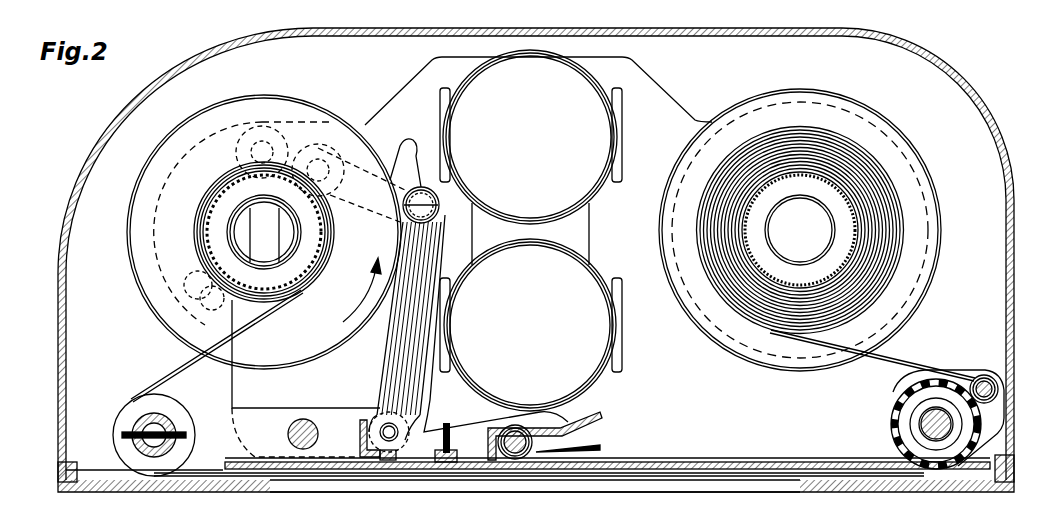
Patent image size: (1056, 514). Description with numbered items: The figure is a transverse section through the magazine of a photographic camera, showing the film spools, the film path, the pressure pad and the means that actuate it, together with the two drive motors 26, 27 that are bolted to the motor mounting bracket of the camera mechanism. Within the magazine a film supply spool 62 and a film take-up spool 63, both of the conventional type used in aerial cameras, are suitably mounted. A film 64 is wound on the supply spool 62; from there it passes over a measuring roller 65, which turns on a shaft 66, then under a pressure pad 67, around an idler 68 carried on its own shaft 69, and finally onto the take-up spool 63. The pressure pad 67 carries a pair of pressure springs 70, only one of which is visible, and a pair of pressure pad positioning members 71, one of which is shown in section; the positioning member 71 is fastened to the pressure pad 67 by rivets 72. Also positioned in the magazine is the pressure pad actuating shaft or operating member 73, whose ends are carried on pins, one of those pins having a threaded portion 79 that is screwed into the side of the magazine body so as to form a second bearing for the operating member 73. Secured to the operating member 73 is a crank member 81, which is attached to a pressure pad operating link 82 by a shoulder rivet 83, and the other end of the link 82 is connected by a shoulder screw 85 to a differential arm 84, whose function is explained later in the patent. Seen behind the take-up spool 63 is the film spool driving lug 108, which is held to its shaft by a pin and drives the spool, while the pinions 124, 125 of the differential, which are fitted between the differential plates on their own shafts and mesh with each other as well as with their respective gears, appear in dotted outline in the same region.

The motor 26 is at (600, 146).
The motor 27 is at (592, 285).
The film supply spool 62 is at (803, 102).
The film take-up spool 63 is at (192, 130).
The film 64 is at (882, 366).
The measuring roller 65 is at (893, 438).
The shaft 66 is at (922, 420).
The pressure pad 67 is at (656, 462).
The idler 68 is at (170, 408).
The shaft 69 is at (140, 425).
The pressure spring 70 is at (578, 452).
The pressure pad positioning member 71 is at (586, 416).
The rivet 72 is at (392, 462).
The pressure pad actuating shaft 73 is at (533, 440).
The threaded portion 79 is at (452, 462).
The crank member 81 is at (443, 432).
The pressure pad operating link 82 is at (395, 368).
The shoulder rivet 83 is at (362, 432).
The differential arm 84 is at (376, 212).
The shoulder screw 85 is at (426, 214).
The film spool driving lug 108 is at (262, 252).
The pinion 124 is at (268, 125).
The pinion 125 is at (332, 140).